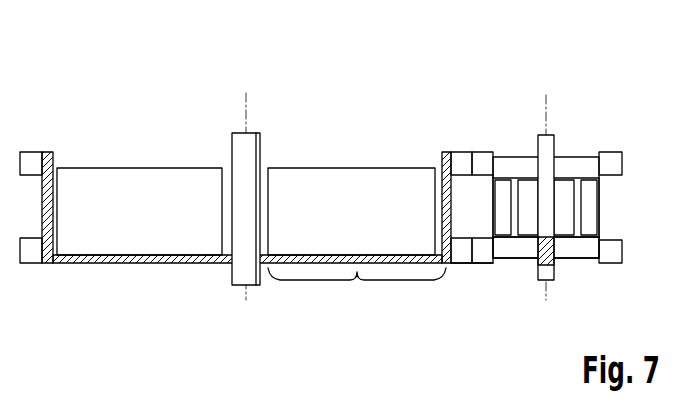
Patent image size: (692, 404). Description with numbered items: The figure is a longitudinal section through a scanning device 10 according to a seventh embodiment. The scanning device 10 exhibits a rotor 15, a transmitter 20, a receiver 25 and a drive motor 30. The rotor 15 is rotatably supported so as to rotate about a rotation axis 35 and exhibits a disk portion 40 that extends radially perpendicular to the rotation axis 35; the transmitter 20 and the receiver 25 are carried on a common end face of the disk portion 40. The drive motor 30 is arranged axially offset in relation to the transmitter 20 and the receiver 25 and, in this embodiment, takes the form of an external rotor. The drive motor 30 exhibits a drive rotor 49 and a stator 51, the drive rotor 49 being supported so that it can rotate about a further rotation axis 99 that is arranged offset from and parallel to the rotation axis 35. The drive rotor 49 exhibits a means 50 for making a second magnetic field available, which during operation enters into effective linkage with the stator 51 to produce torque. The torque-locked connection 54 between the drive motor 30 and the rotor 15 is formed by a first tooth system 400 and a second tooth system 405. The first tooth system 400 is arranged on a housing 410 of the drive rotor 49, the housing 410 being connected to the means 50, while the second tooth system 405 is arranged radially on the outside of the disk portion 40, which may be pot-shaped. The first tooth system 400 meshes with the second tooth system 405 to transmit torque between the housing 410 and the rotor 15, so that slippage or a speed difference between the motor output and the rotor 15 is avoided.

The scanning device 10 is at (505, 79).
The rotor 15 is at (143, 257).
The transmitter 20 is at (148, 185).
The receiver 25 is at (388, 185).
The drive motor 30 is at (597, 156).
The rotation axis 35 is at (244, 125).
The disk portion 40 is at (357, 281).
The drive rotor 49 is at (578, 250).
The means for making a second magnetic field available 50 is at (503, 180).
The stator 51 is at (570, 182).
The torque-locked connection 54 is at (469, 268).
The further rotation axis 99 is at (548, 132).
The first tooth system 400 is at (484, 160).
The second tooth system 405 is at (32, 160).
The housing 410 is at (599, 198).